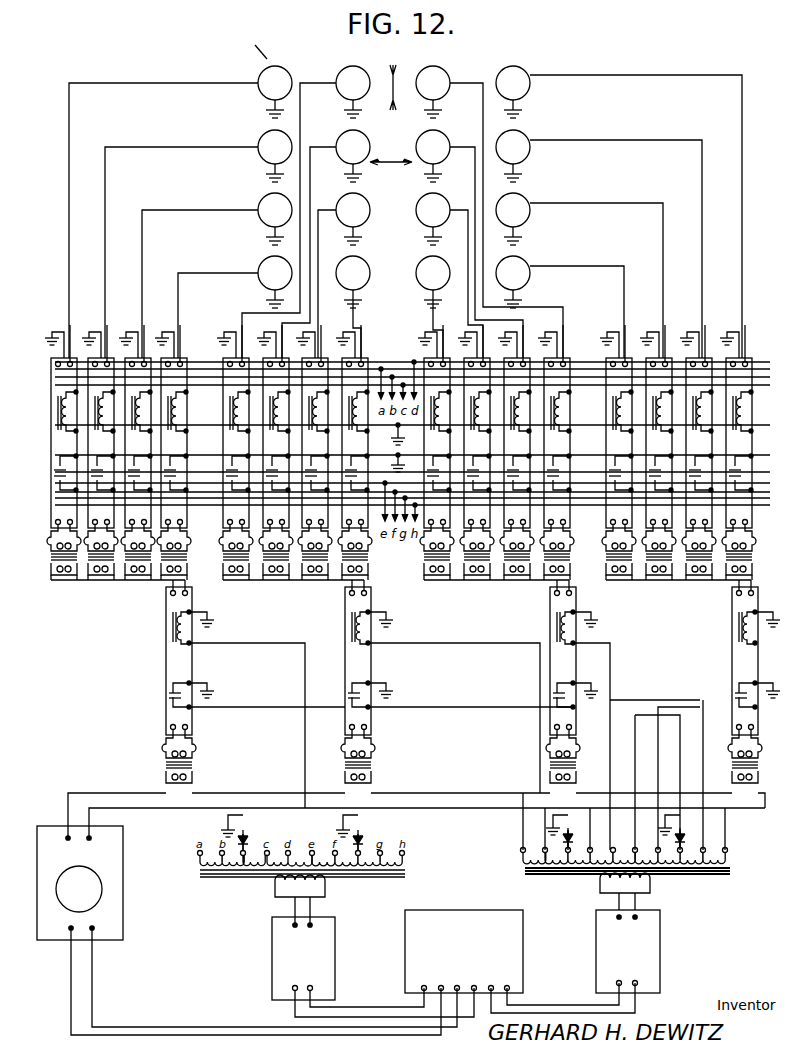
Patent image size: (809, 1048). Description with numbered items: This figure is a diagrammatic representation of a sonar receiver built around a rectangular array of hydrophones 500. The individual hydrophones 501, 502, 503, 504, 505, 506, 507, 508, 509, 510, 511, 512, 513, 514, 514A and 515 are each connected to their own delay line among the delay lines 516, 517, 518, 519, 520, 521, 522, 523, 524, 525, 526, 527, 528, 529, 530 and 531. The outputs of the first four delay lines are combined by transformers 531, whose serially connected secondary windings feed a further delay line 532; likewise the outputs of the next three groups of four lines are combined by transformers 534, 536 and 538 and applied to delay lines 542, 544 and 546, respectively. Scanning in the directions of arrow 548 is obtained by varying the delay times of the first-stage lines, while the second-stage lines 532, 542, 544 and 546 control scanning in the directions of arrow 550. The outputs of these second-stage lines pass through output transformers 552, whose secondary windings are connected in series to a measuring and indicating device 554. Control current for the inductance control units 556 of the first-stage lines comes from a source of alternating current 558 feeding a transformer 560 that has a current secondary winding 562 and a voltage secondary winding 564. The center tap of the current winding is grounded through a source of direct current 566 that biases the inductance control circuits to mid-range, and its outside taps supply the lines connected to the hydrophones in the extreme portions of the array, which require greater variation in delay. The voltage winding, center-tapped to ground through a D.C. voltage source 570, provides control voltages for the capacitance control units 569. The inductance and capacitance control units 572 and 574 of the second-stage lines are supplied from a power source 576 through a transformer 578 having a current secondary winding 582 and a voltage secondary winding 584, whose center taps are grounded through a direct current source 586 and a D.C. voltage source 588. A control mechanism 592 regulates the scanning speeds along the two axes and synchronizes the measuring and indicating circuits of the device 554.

The rectangular array of hydrophones 500 is at (250, 56).
The hydrophone 501 is at (260, 93).
The hydrophone 502 is at (260, 155).
The hydrophone 503 is at (260, 218).
The hydrophone 504 is at (260, 281).
The hydrophone 505 is at (360, 60).
The hydrophone 506 is at (346, 132).
The hydrophone 507 is at (348, 195).
The hydrophone 508 is at (357, 257).
The hydrophone 509 is at (430, 66).
The hydrophone 510 is at (440, 132).
The hydrophone 511 is at (438, 195).
The hydrophone 512 is at (430, 259).
The hydrophone 513 is at (520, 66).
The hydrophone 514 is at (522, 134).
The hydrophone 514A is at (522, 197).
The hydrophone 515 is at (524, 260).
The delay line 516 is at (61, 451).
The delay line 517 is at (99, 451).
The delay line 518 is at (135, 451).
The delay line 519 is at (171, 451).
The delay line 520 is at (231, 451).
The delay line 521 is at (271, 451).
The delay line 522 is at (309, 451).
The delay line 523 is at (351, 451).
The delay line 524 is at (432, 451).
The delay line 525 is at (471, 451).
The delay line 526 is at (513, 451).
The delay line 527 is at (553, 451).
The delay line 528 is at (612, 448).
The delay line 529 is at (654, 448).
The delay line 530 is at (695, 448).
The delay line / combining transformers 531 is at (42, 552).
The delay line 532 is at (165, 662).
The transformers 534 is at (340, 572).
The transformers 536 is at (558, 572).
The transformers 538 is at (726, 570).
The delay line 542 is at (345, 658).
The delay line 544 is at (550, 656).
The delay line 546 is at (732, 656).
The arrow 548 is at (394, 110).
The arrow 550 is at (391, 164).
The group output transformer 552 is at (165, 772).
The measuring and indicating device 554 is at (124, 848).
The inductance control units 556 is at (80, 410).
The source of alternating current 558 is at (272, 947).
The transformer 560 is at (236, 880).
The current secondary winding 562 is at (200, 866).
The voltage secondary winding 564 is at (405, 865).
The source of direct current 566 is at (250, 841).
The capacitance control units 569 is at (57, 468).
The source of D.C. voltage 570 is at (364, 841).
The inductance control units 572 is at (165, 624).
The capacitance control units 574 is at (165, 692).
The power source 576 is at (596, 947).
The transformer 578 is at (730, 872).
The current secondary winding 582 is at (523, 862).
The voltage secondary winding 584 is at (728, 860).
The direct current source 586 is at (555, 838).
The D.C. voltage source 588 is at (690, 836).
The control mechanism 592 is at (405, 947).